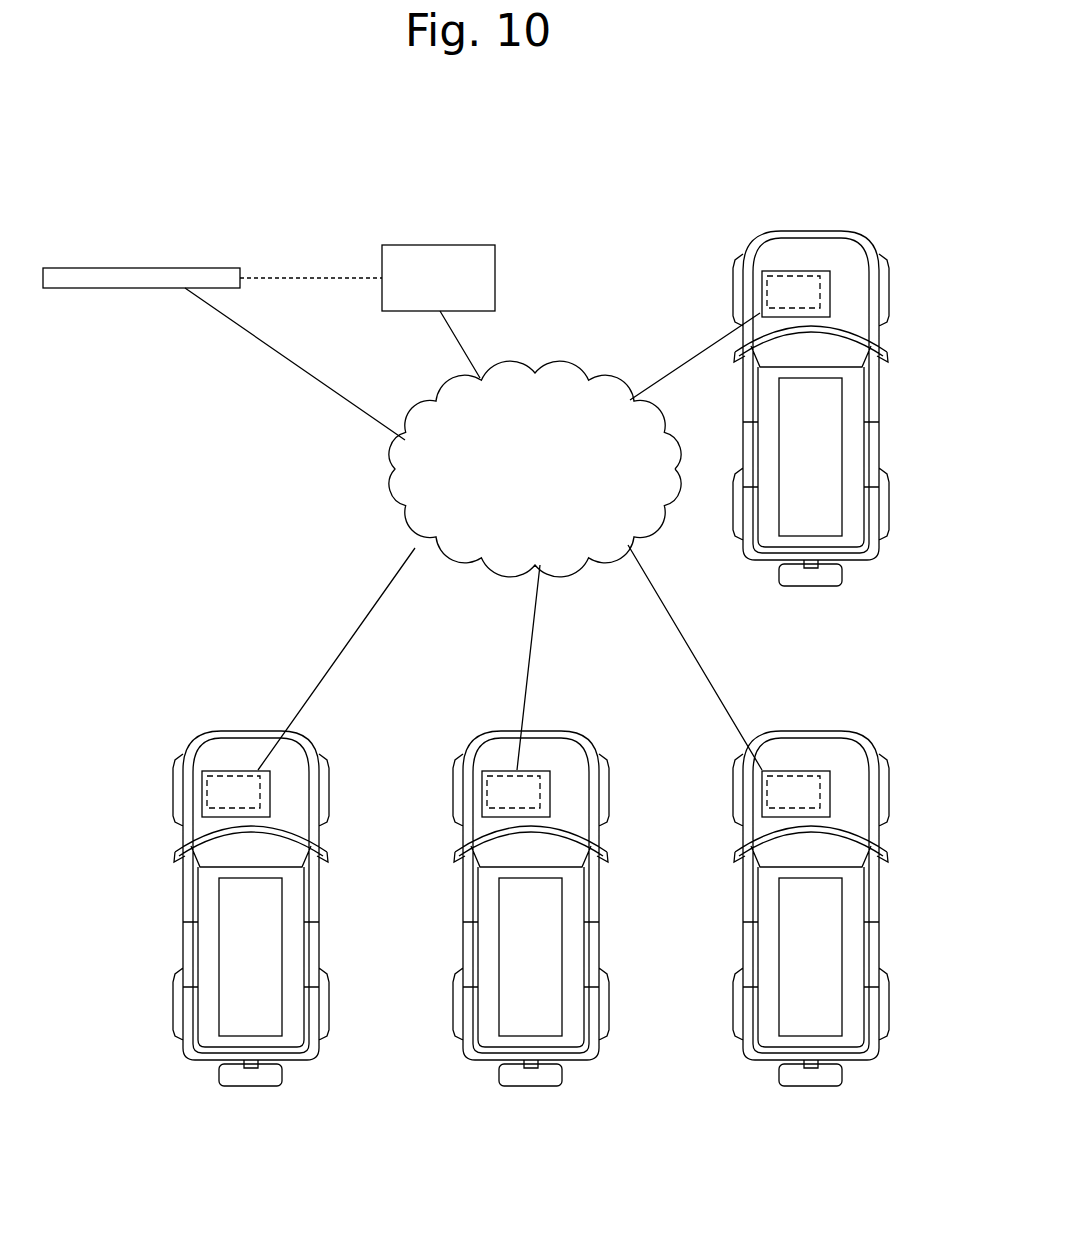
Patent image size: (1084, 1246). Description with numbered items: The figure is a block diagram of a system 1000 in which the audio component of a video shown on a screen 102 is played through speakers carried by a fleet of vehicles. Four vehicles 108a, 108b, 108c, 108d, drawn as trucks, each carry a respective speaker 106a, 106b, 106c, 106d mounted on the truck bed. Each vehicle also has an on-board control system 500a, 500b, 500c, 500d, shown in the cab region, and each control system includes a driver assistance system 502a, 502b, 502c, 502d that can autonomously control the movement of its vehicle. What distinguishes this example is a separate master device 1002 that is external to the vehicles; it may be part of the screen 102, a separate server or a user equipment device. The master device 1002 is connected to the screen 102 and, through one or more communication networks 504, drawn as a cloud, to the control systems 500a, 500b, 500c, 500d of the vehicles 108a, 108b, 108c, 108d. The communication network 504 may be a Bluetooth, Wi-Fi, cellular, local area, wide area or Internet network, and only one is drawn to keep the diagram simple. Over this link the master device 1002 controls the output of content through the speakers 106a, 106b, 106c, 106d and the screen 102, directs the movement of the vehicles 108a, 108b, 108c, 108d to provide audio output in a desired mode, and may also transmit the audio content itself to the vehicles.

The system 1000 is at (820, 92).
The screen 102 is at (90, 268).
The master device 1002 is at (403, 245).
The communication network 504 is at (552, 478).
The vehicle 108a is at (211, 900).
The vehicle 108b is at (492, 900).
The vehicle 108c is at (773, 900).
The vehicle 108d is at (806, 370).
The driver assistance system 502a is at (181, 785).
The driver assistance system 502b is at (462, 785).
The driver assistance system 502c is at (743, 785).
The driver assistance system 502d is at (742, 279).
The control system 500a is at (176, 805).
The control system 500b is at (457, 805).
The control system 500c is at (738, 805).
The control system 500d is at (737, 298).
The speaker 106a is at (245, 1014).
The speaker 106b is at (525, 1014).
The speaker 106c is at (806, 1014).
The speaker 106d is at (868, 457).